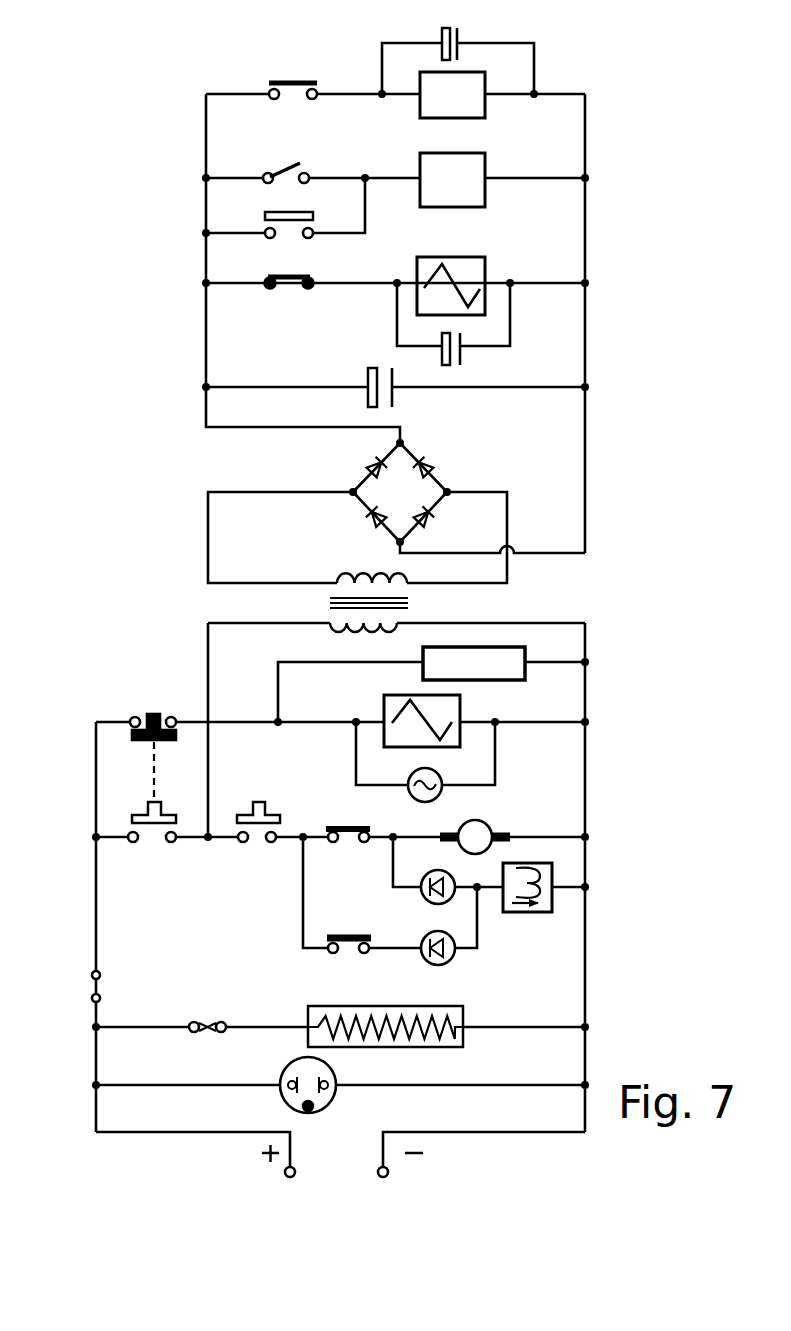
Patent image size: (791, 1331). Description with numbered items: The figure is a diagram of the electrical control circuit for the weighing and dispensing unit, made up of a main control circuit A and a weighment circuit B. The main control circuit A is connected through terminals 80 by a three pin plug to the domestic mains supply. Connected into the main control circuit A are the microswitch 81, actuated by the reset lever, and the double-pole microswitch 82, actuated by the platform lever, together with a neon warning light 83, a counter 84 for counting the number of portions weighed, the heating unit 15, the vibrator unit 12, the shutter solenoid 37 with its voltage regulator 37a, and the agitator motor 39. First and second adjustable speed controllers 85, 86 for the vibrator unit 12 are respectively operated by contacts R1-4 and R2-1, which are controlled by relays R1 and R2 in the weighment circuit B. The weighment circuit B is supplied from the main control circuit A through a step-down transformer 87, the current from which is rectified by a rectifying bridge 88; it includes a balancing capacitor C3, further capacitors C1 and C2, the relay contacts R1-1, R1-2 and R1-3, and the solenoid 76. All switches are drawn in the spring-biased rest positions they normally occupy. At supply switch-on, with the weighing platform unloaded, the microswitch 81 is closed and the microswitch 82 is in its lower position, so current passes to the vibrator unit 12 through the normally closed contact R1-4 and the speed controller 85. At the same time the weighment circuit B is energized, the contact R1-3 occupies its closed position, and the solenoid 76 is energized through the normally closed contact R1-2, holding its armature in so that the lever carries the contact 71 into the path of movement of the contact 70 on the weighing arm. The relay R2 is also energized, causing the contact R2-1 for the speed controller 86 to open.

The capacitor C2 is at (460, 34).
The relay R2 is at (452, 95).
The contact R1-3 is at (293, 75).
The contact 70 is at (278, 172).
The contact 71 is at (310, 174).
The relay R1 is at (452, 180).
The contact R1-1 is at (258, 222).
The contact R1-2 is at (258, 277).
The solenoid 76 is at (488, 265).
The capacitor C1 is at (462, 351).
The balancing capacitor C3 is at (393, 390).
The rectifying bridge 88 is at (432, 477).
The step-down transformer 87 is at (410, 601).
The counter 84 is at (527, 655).
The shutter solenoid 37 is at (462, 706).
The voltage regulator 37a is at (443, 789).
The double-pole microswitch 82 is at (142, 776).
The microswitch 81 is at (252, 843).
The contact R1-4 is at (358, 826).
The agitator motor 39 is at (491, 826).
The vibrator unit 12 is at (555, 874).
The first adjustable speed controller 85 is at (452, 899).
The second adjustable speed controller 86 is at (457, 953).
The contact R2-1 is at (328, 952).
The heating unit 15 is at (465, 1025).
The neon warning light 83 is at (336, 1075).
The terminals 80 is at (362, 1178).
The main control circuit A is at (88, 920).
The weighment circuit B is at (611, 176).